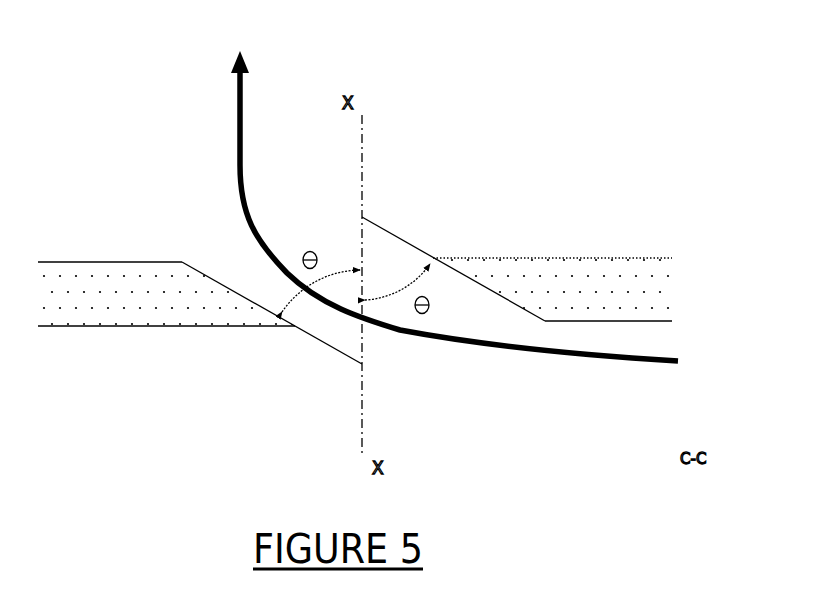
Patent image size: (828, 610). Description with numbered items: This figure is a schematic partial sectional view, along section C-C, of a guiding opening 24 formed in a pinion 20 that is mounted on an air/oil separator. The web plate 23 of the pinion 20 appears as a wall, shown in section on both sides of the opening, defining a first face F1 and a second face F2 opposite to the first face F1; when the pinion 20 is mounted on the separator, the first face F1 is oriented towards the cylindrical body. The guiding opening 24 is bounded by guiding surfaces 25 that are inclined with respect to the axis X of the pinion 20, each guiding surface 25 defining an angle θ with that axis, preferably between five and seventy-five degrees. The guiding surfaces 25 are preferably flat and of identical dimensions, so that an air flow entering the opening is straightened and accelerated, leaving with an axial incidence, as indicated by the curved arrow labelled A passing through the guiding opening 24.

The pinion 20 is at (582, 199).
The web plate 23 is at (95, 262).
The guiding opening 24 is at (418, 387).
The guiding surface 25 is at (220, 278).
The first face F1 is at (133, 258).
The second face F2 is at (150, 332).